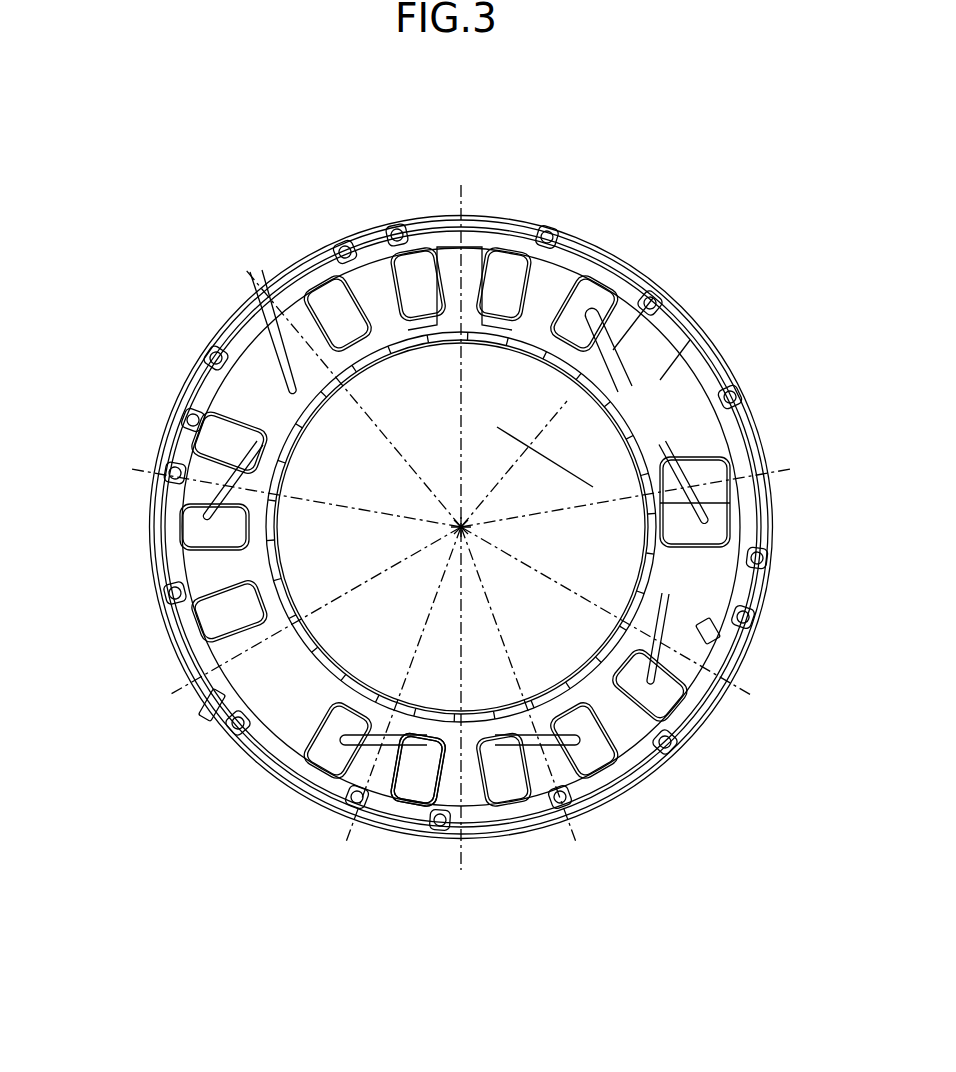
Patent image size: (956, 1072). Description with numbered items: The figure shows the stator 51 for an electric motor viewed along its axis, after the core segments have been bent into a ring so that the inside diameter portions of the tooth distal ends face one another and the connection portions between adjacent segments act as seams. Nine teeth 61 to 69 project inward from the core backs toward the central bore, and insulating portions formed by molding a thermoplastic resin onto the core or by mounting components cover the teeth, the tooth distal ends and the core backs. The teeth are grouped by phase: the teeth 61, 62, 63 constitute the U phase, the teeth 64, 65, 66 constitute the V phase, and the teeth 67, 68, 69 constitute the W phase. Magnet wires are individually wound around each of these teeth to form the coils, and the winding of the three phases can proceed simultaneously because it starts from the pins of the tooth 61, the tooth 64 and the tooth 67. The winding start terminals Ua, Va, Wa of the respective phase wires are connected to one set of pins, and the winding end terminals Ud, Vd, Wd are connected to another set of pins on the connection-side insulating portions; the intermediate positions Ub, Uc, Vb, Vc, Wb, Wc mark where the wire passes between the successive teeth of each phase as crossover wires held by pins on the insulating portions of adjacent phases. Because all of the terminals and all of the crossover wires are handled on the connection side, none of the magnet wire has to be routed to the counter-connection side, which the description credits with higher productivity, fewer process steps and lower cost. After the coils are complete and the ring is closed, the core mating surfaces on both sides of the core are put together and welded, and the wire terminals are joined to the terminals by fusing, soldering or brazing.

The stator 51 is at (520, 157).
The tooth 61 is at (214, 716).
The tooth 62 is at (227, 443).
The tooth 63 is at (285, 352).
The tooth 64 is at (408, 310).
The tooth 65 is at (637, 353).
The tooth 66 is at (700, 457).
The tooth 67 is at (716, 630).
The tooth 68 is at (513, 758).
The tooth 69 is at (407, 758).
The winding start terminal Ua is at (330, 668).
The U-phase coil b Ub is at (170, 512).
The U-phase coil c Uc is at (175, 460).
The winding end terminal Ud is at (196, 424).
The winding start terminal Va is at (409, 328).
The V-phase coil b Vb is at (612, 262).
The V-phase coil c Vc is at (688, 303).
The winding end terminal Vd is at (383, 362).
The winding start terminal Wa is at (750, 613).
The W-phase coil b Wb is at (613, 797).
The W-phase coil c Wc is at (535, 830).
The winding end terminal Wd is at (747, 563).